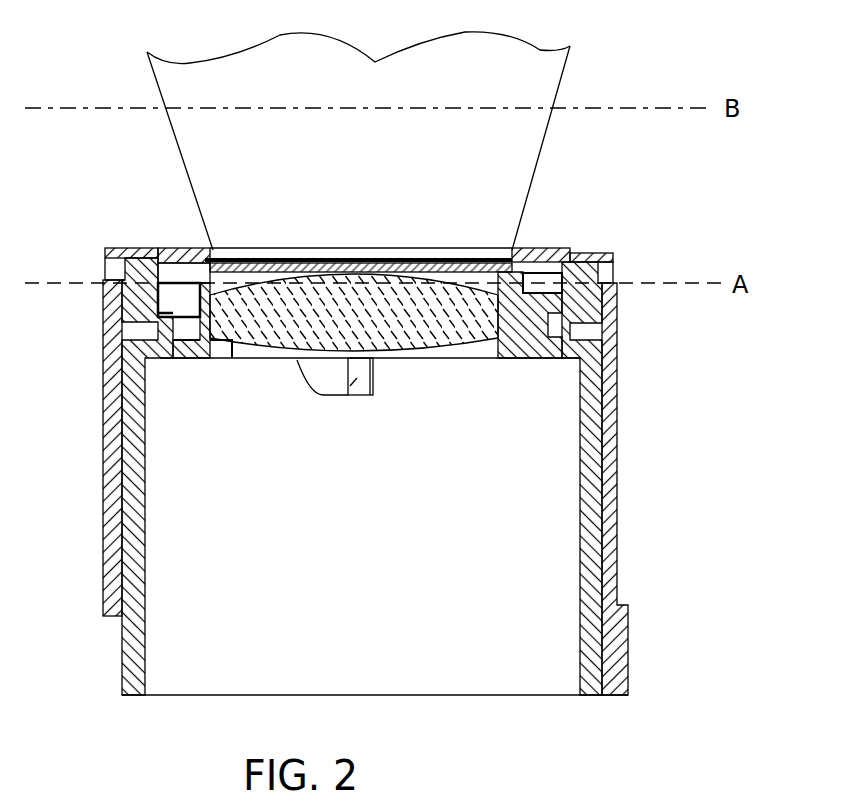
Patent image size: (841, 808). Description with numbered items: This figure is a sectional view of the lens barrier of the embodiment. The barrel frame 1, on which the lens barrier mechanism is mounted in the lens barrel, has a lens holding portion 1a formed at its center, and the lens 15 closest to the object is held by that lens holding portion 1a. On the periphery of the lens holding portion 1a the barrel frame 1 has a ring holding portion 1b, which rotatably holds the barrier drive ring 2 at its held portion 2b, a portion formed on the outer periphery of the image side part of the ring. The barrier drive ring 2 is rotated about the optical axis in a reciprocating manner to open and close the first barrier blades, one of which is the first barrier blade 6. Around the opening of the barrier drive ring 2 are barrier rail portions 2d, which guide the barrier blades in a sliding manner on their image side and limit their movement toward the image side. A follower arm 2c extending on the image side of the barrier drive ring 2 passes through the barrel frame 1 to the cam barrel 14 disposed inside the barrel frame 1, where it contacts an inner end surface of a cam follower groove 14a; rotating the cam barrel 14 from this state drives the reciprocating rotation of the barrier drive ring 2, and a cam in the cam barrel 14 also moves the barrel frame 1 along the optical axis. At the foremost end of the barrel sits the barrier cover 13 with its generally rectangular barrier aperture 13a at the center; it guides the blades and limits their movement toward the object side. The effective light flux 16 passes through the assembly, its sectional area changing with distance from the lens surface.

The barrel frame 1 is at (104, 376).
The lens holding portion 1a is at (233, 345).
The ring holding portion 1b is at (195, 350).
The barrier drive ring 2 is at (180, 302).
The held portion 2b is at (165, 350).
The follower arm 2c is at (350, 365).
The barrier rail portions 2d is at (263, 258).
The first barrier blade 6 is at (453, 258).
The barrier cover 13 is at (174, 248).
The barrier aperture 13a is at (215, 254).
The cam barrel 14 is at (122, 646).
The cam follower groove 14a is at (375, 384).
The lens 15 is at (425, 322).
The effective light flux 16 is at (548, 128).